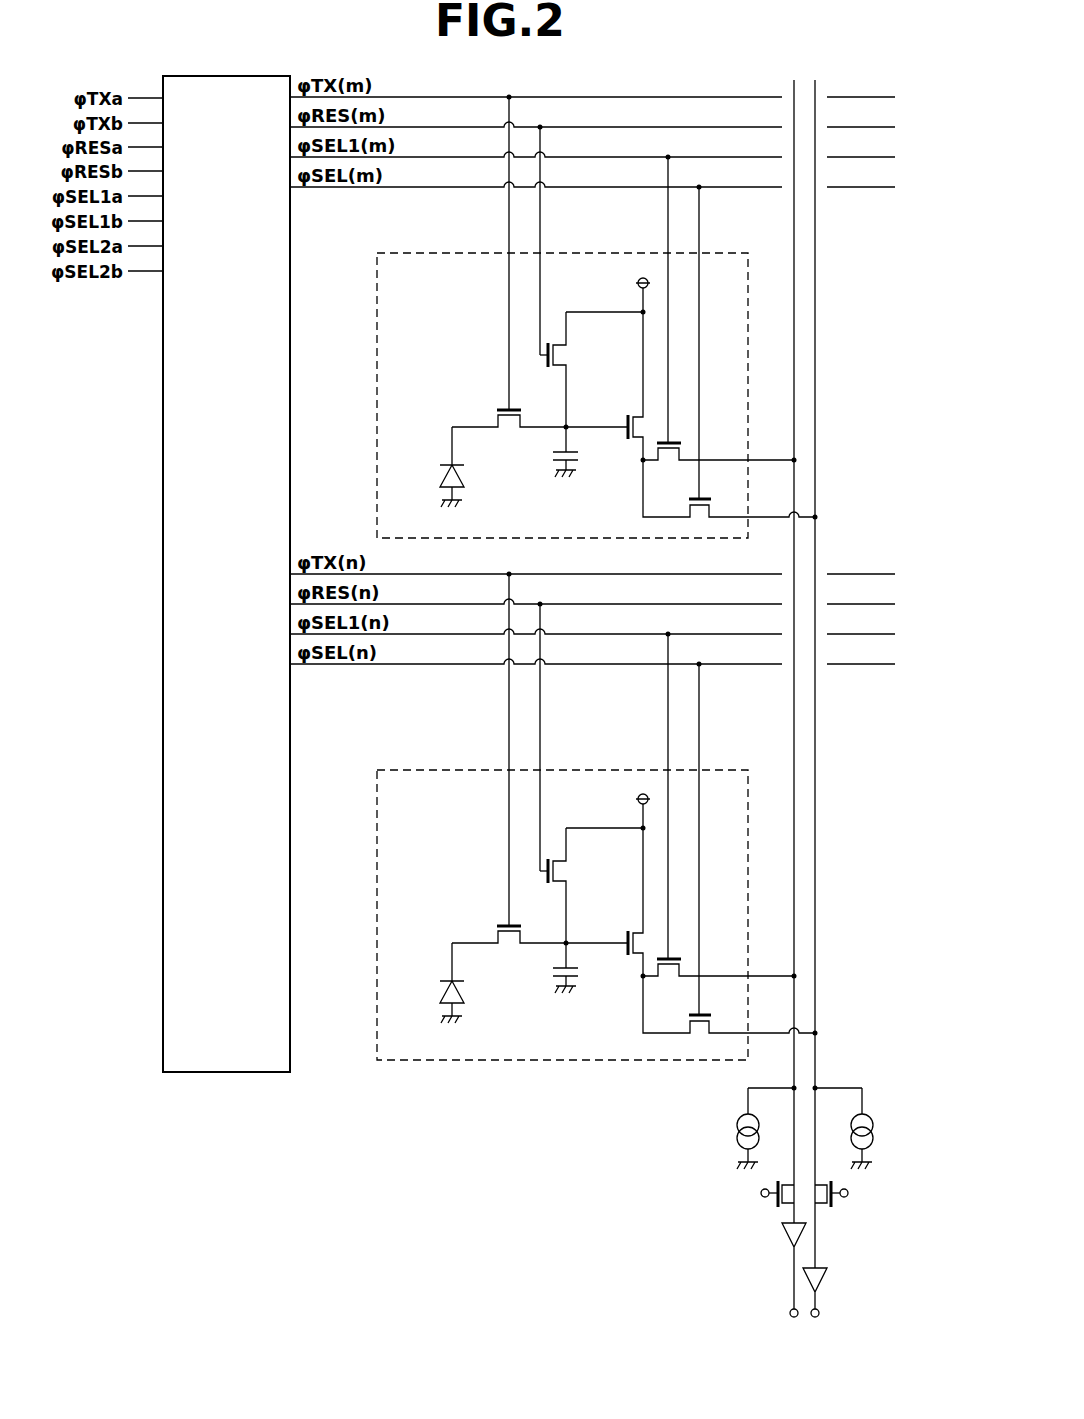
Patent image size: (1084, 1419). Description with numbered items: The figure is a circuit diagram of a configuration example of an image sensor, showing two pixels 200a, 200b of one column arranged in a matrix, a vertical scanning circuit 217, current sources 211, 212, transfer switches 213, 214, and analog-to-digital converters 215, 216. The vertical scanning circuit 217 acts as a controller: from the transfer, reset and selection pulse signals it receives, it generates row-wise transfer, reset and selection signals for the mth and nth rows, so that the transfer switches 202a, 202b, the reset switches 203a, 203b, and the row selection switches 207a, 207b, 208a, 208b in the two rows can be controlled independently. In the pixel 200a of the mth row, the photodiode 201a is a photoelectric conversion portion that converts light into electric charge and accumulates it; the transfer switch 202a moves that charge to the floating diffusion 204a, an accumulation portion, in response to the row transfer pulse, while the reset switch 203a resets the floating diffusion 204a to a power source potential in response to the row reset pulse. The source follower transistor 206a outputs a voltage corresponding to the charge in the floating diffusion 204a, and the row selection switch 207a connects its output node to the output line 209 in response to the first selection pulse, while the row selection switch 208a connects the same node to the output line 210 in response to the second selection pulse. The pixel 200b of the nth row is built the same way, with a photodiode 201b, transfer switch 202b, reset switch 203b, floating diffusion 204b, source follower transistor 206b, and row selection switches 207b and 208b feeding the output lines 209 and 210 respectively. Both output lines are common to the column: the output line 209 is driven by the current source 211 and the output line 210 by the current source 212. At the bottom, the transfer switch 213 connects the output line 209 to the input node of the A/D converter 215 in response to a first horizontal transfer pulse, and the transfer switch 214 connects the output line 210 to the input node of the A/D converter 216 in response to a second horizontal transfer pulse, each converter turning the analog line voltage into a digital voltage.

The vertical scanning circuit 217 is at (225, 76).
The output line 209 is at (793, 90).
The output line 210 is at (816, 90).
The pixel 200a is at (426, 253).
The pixel 200b is at (429, 770).
The photodiode 201a is at (440, 476).
The photodiode 201b is at (440, 992).
The transfer switch 202a is at (512, 432).
The transfer switch 202b is at (512, 948).
The reset switch 203a is at (603, 341).
The reset switch 203b is at (603, 857).
The floating diffusion 204a is at (552, 453).
The floating diffusion 204b is at (552, 969).
The source follower transistor 206a is at (628, 415).
The source follower transistor 206b is at (628, 931).
The row selection switch 207a is at (670, 462).
The row selection switch 207b is at (670, 978).
The row selection switch 208a is at (701, 506).
The row selection switch 208b is at (701, 1022).
The current source 211 is at (737, 1140).
The current source 212 is at (873, 1140).
The transfer switch 213 is at (782, 1204).
The transfer switch 214 is at (827, 1204).
The A/D converter 215 is at (795, 1245).
The A/D converter 216 is at (825, 1276).